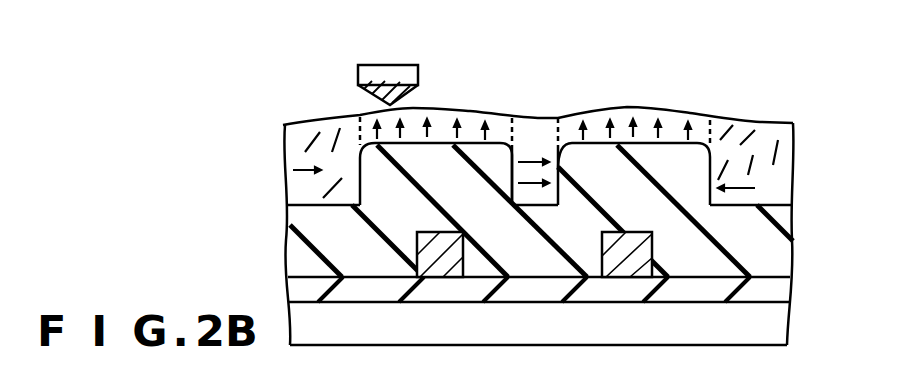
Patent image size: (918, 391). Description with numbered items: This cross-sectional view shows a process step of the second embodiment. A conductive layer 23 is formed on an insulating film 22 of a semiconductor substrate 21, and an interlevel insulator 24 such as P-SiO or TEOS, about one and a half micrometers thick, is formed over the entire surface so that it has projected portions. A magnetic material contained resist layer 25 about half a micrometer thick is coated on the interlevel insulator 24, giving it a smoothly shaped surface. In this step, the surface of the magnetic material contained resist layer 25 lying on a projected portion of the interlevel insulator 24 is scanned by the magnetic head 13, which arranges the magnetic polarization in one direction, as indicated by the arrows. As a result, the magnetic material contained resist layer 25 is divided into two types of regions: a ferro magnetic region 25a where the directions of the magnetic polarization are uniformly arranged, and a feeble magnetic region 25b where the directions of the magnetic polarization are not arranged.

The magnetic head 13 is at (385, 78).
The semiconductor substrate 21 is at (775, 323).
The insulating film 22 is at (770, 290).
The conductive layer 23 is at (437, 262).
The interlevel insulator 24 is at (762, 243).
The magnetic material contained resist layer 25 is at (568, 65).
The ferro magnetic region 25a is at (477, 125).
The feeble magnetic region 25b is at (297, 140).